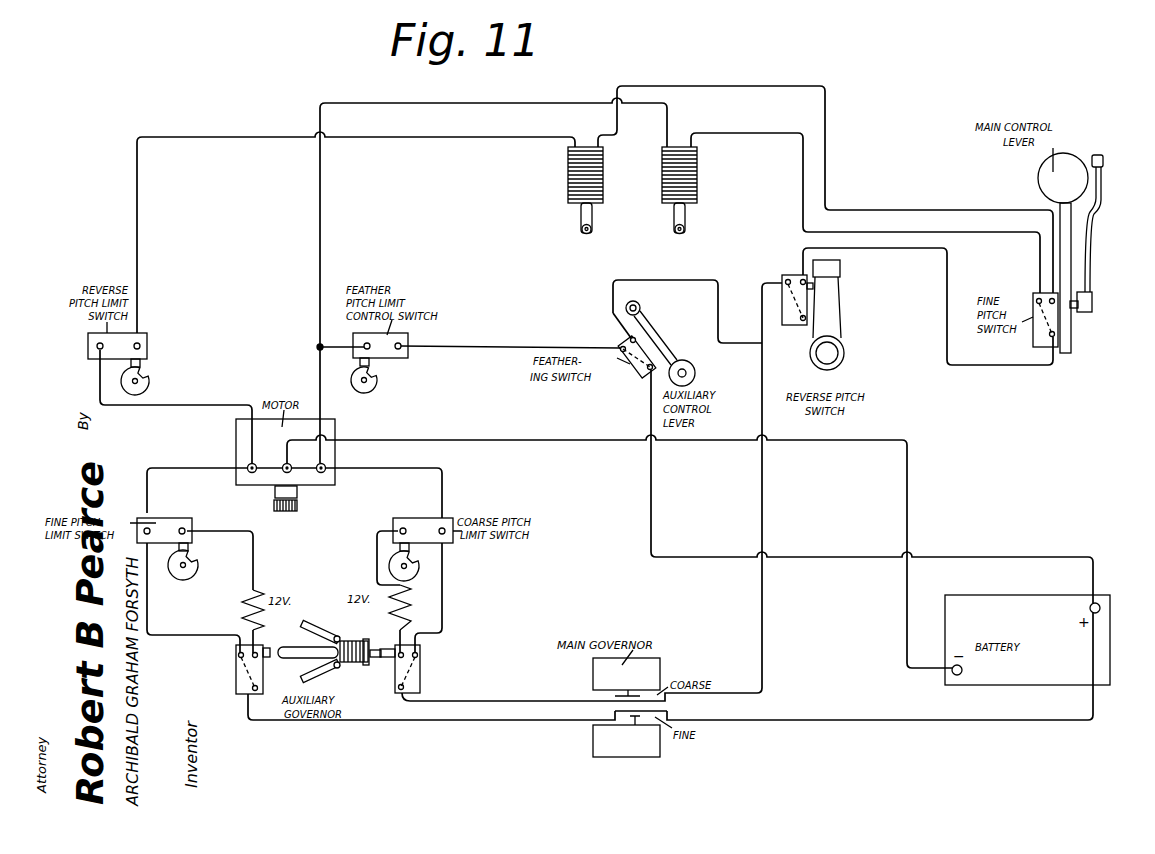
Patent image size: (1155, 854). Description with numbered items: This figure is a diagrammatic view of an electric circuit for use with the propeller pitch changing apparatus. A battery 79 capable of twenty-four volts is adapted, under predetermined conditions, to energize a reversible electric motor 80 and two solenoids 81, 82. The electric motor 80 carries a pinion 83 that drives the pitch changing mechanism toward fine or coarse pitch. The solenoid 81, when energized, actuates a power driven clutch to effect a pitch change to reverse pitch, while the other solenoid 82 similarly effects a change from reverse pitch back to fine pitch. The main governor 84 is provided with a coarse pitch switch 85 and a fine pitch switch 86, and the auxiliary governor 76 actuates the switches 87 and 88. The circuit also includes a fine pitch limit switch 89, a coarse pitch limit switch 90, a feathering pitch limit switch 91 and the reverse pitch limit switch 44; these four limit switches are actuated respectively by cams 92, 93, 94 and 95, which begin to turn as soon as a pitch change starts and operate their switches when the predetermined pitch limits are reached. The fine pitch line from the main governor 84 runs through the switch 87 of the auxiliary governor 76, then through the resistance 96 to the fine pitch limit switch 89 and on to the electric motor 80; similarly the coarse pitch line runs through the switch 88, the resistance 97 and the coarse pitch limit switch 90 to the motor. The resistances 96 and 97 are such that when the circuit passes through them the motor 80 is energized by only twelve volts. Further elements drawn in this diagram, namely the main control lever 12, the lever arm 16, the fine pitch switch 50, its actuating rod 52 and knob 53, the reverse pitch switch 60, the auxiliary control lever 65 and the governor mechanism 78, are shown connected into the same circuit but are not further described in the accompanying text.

The main control lever 12 is at (1062, 210).
The reverse pitch switch lever arm 16 is at (832, 317).
The reverse pitch limit switch 44 is at (95, 351).
The fine pitch switch 50 is at (1033, 334).
The fine pitch switch actuating rod 52 is at (1085, 242).
The knob 53 is at (1103, 158).
The reverse pitch switch 60 is at (793, 277).
The auxiliary control lever 65 is at (658, 338).
The auxiliary governor 76 is at (640, 377).
The auxiliary governor 78 is at (327, 633).
The battery 79 is at (1058, 590).
The reversible electric motor 80 is at (263, 433).
The solenoid 81 is at (568, 177).
The solenoid 82 is at (664, 178).
The pinion 83 is at (298, 508).
The main governor 84 is at (642, 631).
The coarse pitch switch 85 is at (638, 690).
The fine pitch switch 86 is at (632, 718).
The switch 87 is at (237, 682).
The switch 88 is at (413, 670).
The fine pitch limit switch 89 is at (172, 525).
The coarse pitch limit switch 90 is at (447, 518).
The feathering pitch limit switch 91 is at (395, 353).
The cam 92 is at (190, 570).
The cam 93 is at (413, 570).
The cam 94 is at (368, 388).
The cam 95 is at (153, 385).
The resistance 96 is at (245, 613).
The resistance 97 is at (412, 597).